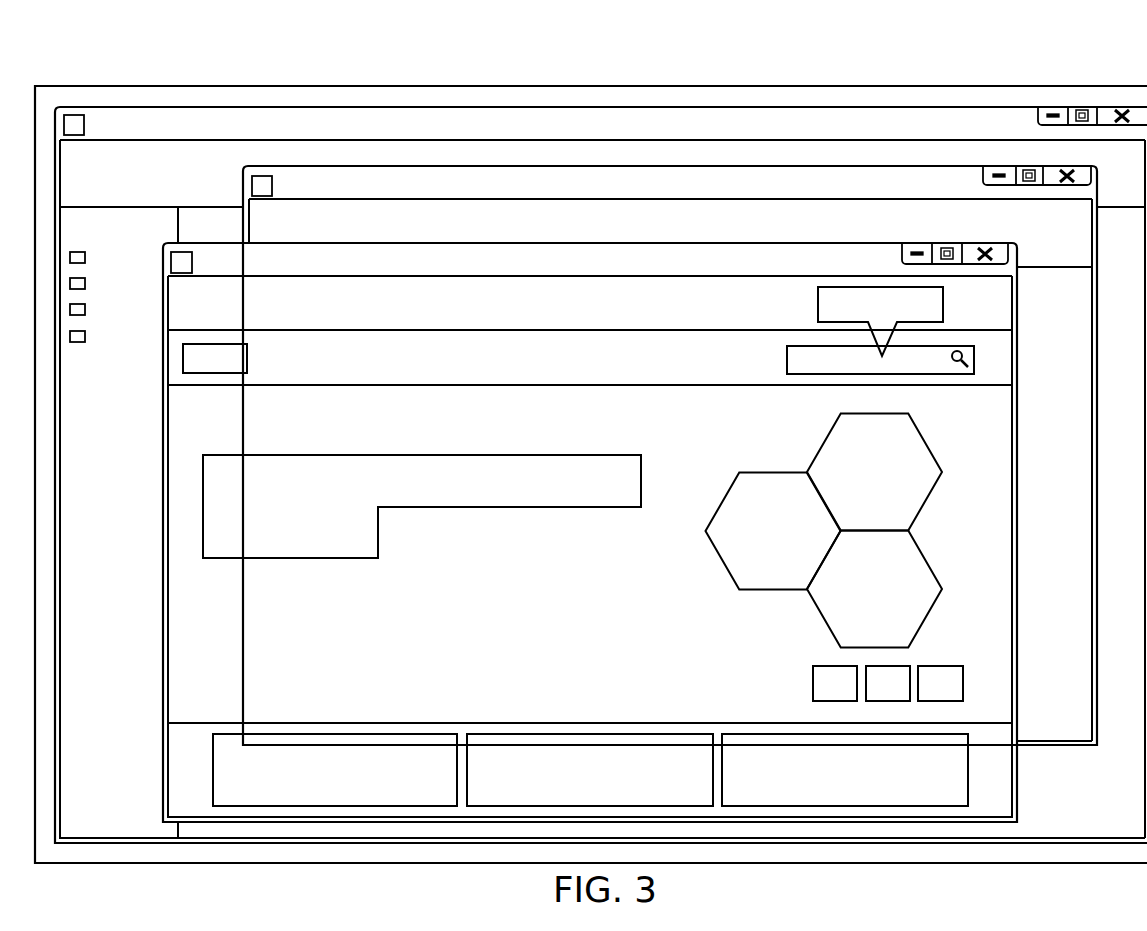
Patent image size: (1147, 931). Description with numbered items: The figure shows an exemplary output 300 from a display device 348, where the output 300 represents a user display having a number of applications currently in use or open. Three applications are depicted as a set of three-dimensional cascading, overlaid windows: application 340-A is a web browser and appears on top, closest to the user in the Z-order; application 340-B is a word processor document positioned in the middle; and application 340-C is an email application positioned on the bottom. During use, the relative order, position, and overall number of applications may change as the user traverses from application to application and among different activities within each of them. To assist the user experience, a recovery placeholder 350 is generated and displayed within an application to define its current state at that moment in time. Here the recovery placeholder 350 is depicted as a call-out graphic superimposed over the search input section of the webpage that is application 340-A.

The output 300 is at (587, 444).
The display device 348 is at (298, 86).
The web browser application 340-A is at (568, 263).
The word processor document application 340-B is at (735, 180).
The email application 340-C is at (574, 118).
The recovery placeholder 350 is at (818, 304).